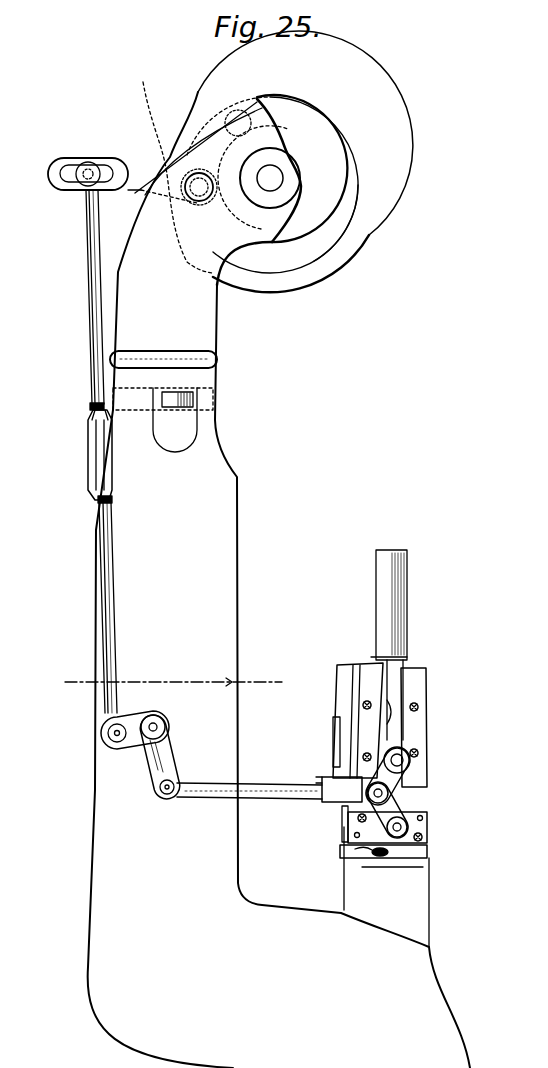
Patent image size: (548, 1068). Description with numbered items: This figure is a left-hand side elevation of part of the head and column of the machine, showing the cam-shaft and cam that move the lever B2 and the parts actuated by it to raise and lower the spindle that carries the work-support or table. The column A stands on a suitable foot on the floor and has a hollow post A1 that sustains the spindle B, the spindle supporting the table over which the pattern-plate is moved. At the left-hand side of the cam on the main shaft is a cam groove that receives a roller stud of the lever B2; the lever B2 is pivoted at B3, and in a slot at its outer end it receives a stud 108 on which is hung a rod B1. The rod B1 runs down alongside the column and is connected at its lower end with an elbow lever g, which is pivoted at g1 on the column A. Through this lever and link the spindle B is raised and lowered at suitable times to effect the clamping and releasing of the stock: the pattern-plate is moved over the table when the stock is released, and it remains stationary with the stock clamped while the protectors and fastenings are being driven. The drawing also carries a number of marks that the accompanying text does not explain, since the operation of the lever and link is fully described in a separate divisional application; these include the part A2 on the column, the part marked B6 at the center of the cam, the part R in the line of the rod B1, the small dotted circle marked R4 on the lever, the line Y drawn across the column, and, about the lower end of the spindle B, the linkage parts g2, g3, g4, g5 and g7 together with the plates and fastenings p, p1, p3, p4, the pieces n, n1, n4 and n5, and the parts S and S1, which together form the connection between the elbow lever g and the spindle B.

The stud 108 is at (90, 168).
The column A is at (279, 580).
The hollow post A1 is at (442, 877).
The cross bar A2 is at (218, 333).
The spindle B is at (406, 633).
The rod B1 is at (92, 388).
The lever B2 is at (135, 162).
The pivot B3 is at (196, 205).
The hub B6 is at (273, 183).
The turnbuckle R is at (96, 447).
The pin hole R4 is at (230, 112).
The section line Y is at (168, 685).
The elbow lever g is at (150, 772).
The pivot g1 is at (160, 722).
The horizontal bar g2 is at (261, 780).
The pivot g3 is at (388, 790).
The lower link g4 is at (400, 813).
The link g5 is at (410, 768).
The pivot g7 is at (407, 753).
The bolt p is at (364, 705).
The right plate p1 is at (421, 687).
The strip p3 is at (367, 733).
The bolt p4 is at (363, 758).
The base plate n is at (374, 860).
The stop n1 is at (372, 855).
The notch n4 is at (387, 720).
The lower rod n5 is at (391, 693).
The spacer S is at (351, 832).
The screw S1 is at (434, 843).